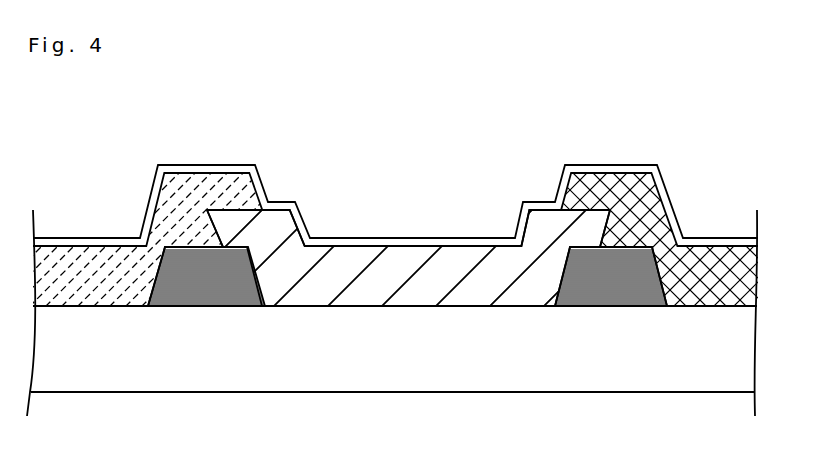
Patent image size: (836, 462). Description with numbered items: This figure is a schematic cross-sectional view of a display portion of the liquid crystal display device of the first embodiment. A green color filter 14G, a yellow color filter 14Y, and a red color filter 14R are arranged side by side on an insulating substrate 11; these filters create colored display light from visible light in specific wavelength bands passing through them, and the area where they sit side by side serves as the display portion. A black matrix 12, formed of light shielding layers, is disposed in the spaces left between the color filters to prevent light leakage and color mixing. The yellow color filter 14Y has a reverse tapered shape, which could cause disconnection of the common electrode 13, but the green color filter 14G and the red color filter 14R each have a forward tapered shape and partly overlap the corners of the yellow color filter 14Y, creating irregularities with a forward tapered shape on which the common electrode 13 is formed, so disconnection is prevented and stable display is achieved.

The insulating substrate 11 is at (603, 378).
The black matrix 12 is at (192, 258).
The common electrode 13 is at (727, 245).
The green color filter 14G is at (217, 200).
The yellow color filter 14Y is at (461, 263).
The red color filter 14R is at (643, 200).